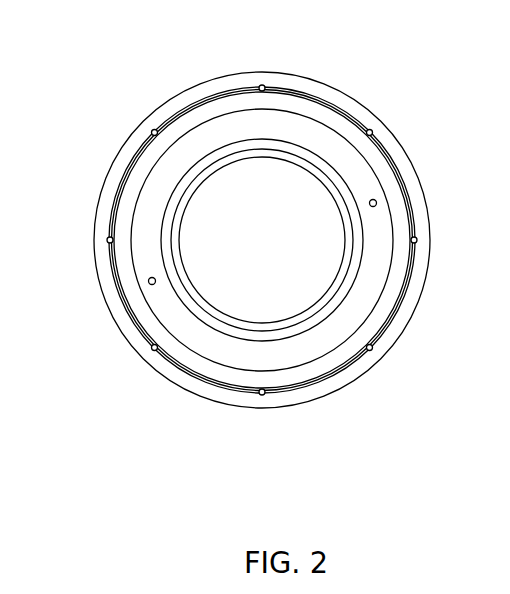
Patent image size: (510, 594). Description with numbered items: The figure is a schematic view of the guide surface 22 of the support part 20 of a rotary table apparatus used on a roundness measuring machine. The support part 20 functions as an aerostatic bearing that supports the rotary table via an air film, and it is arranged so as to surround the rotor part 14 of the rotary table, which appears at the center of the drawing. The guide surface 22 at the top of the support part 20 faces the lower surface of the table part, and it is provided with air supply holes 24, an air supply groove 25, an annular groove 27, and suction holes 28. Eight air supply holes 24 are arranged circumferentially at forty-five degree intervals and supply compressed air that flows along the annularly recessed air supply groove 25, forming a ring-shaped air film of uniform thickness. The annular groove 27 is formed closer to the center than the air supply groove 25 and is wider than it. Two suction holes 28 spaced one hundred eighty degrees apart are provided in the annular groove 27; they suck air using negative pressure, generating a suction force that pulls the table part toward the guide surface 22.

The rotor part 14 is at (262, 289).
The support part 20 is at (271, 242).
The guide surface 22 is at (287, 240).
The air supply hole 24 is at (265, 242).
The air supply groove 25 is at (262, 209).
The annular groove 27 is at (262, 205).
The suction hole 28 is at (260, 240).